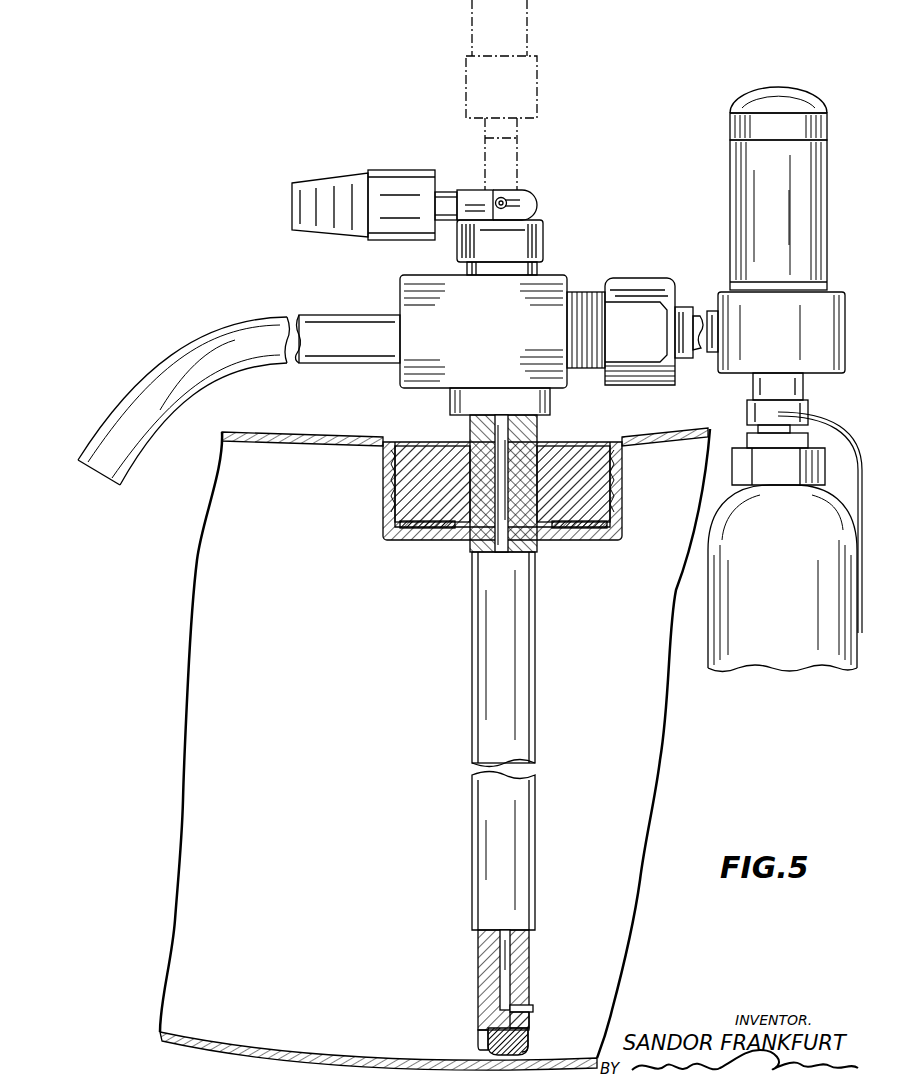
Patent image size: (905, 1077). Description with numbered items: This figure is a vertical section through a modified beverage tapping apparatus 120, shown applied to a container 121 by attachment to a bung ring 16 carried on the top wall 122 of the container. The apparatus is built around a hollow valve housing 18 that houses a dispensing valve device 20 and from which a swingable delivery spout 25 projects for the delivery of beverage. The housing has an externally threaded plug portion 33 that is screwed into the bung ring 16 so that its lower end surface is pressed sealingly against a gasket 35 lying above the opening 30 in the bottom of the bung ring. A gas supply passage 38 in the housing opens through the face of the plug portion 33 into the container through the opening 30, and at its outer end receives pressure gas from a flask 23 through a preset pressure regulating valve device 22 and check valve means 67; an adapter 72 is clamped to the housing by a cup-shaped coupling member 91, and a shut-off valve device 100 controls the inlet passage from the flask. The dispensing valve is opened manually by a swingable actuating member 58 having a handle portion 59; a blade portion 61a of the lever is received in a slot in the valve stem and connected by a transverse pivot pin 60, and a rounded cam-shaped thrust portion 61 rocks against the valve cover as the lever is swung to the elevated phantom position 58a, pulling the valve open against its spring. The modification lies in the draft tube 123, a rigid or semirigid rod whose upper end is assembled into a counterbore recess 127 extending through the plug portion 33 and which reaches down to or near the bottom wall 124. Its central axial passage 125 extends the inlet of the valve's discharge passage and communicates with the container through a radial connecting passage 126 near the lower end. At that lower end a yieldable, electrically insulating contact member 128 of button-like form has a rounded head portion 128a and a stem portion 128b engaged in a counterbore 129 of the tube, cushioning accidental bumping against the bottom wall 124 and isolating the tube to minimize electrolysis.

The phantom position of actuating member 58a is at (527, 30).
The handle portion 59 is at (335, 185).
The actuating member 58 is at (397, 182).
The blade portion 61a is at (462, 197).
The cam-shaped thrust portion 61 is at (518, 192).
The transverse pivot pin 60 is at (510, 210).
The tapping apparatus 120 is at (553, 272).
The valve housing 18 is at (447, 277).
The dispensing valve device 20 is at (397, 378).
The delivery spout 25 is at (347, 297).
The check valve means 67 is at (650, 258).
The coupling member 91 is at (647, 380).
The adapter 72 is at (677, 302).
The preset pressure regulating valve device 22 is at (843, 207).
The shut-off valve device 100 is at (778, 412).
The flask 23 is at (760, 657).
The top wall 122 is at (317, 433).
The container 121 is at (277, 403).
The bottom wall 124 is at (358, 1033).
The bung ring 16 is at (380, 510).
The counterbore recess 127 is at (468, 477).
The plug portion 33 is at (597, 508).
The opening 30 is at (543, 533).
The gasket 35 is at (590, 533).
The gas supply passage 38 is at (540, 452).
The draft tube 123 is at (466, 608).
The central axial passage 125 is at (508, 950).
The radial connecting passage 126 is at (537, 1007).
The stem portion 128b is at (533, 1030).
The rounded head portion 128a is at (528, 1052).
The contact member 128 is at (490, 1052).
The counterbore 129 is at (477, 1030).